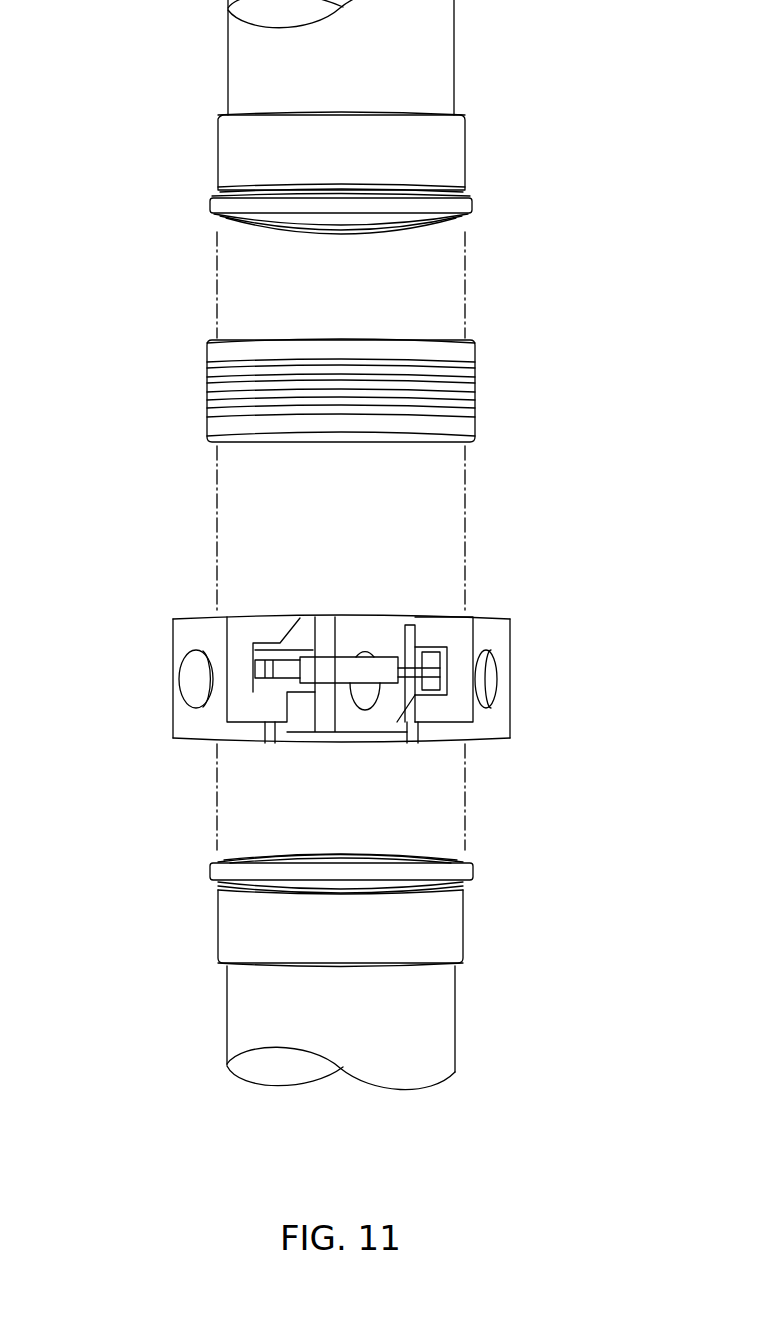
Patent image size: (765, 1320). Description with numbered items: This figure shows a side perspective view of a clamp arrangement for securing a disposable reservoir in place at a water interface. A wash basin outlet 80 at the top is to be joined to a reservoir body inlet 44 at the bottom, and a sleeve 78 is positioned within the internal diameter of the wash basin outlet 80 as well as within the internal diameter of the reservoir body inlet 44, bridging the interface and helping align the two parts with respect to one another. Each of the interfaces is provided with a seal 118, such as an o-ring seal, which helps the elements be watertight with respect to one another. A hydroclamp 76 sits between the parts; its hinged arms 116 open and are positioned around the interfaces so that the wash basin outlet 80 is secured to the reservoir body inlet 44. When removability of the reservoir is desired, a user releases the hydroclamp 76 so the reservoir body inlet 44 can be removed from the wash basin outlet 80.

The wash basin outlet 80 is at (238, 144).
The seals 118 is at (210, 200).
The sleeve 78 is at (435, 403).
The hydroclamp 76 is at (394, 642).
The hinged arms 116 is at (447, 614).
The reservoir body inlet 44 is at (227, 937).